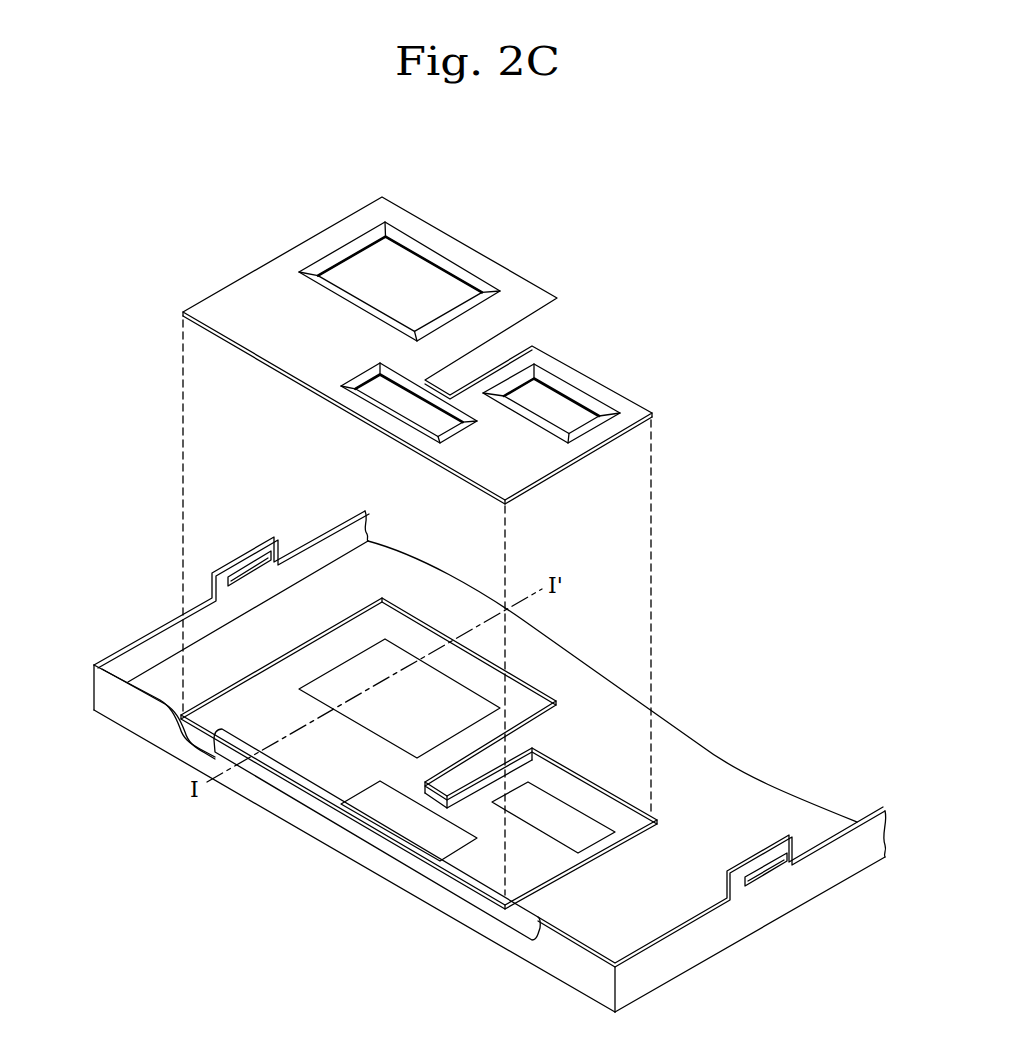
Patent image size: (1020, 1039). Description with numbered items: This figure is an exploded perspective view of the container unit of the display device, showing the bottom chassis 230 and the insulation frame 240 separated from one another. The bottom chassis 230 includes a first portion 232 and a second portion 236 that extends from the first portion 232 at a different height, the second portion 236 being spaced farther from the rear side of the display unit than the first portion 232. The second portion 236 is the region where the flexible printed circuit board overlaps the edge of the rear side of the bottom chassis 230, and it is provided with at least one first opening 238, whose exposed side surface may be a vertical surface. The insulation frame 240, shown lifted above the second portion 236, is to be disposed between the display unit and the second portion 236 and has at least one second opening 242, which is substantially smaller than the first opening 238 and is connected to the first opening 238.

The bottom chassis 230 is at (110, 648).
The first portion 232 is at (753, 793).
The second portion 236 is at (562, 790).
The first opening 238 is at (575, 829).
The insulation frame 240 is at (172, 307).
The second opening 242 is at (558, 403).